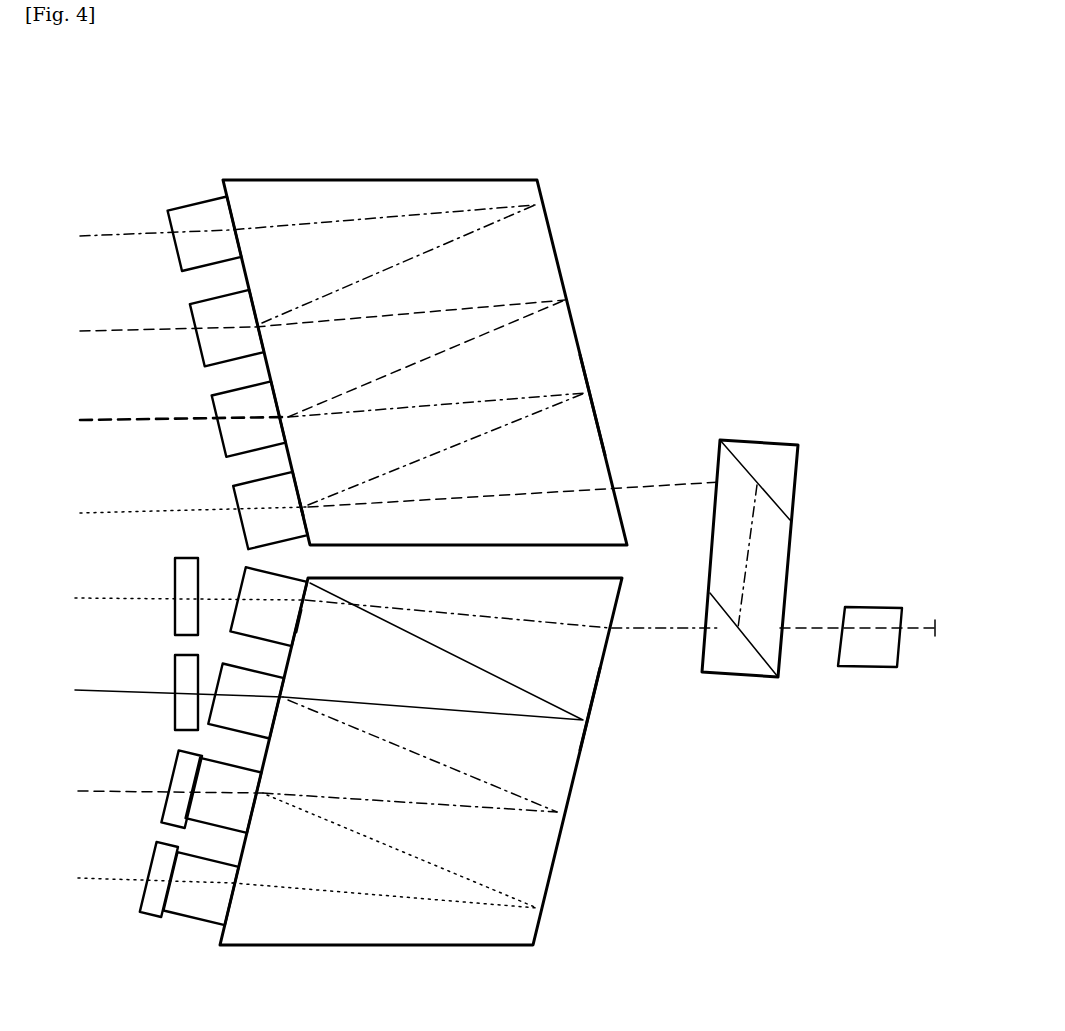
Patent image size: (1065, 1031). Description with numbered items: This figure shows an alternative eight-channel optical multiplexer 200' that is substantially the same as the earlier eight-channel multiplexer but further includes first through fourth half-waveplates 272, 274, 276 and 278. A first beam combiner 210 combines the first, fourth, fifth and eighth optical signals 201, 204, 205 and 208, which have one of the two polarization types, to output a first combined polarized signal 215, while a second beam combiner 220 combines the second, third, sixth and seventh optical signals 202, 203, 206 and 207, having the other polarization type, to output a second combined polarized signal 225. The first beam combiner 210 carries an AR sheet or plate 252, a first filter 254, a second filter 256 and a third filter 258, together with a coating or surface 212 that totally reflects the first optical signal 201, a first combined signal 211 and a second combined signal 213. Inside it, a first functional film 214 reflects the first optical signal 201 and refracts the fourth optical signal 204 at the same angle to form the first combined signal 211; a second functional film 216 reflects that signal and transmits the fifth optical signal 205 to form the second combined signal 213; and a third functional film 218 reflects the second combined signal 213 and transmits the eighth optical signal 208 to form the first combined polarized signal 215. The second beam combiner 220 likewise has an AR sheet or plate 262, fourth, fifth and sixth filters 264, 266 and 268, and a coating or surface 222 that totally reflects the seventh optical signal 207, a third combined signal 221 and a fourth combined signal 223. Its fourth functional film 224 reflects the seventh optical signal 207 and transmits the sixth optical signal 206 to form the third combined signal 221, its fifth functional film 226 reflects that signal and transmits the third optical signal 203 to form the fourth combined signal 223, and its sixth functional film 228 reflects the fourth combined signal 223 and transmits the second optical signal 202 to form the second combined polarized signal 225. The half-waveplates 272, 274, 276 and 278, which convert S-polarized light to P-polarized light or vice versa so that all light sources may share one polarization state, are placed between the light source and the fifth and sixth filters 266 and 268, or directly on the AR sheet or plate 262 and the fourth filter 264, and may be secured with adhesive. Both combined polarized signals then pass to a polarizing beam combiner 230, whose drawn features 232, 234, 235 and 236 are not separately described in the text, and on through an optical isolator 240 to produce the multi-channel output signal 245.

The alternative eight-channel optical multiplexer 200' is at (401, 533).
The first optical signal 201 is at (110, 232).
The second optical signal 202 is at (135, 598).
The third optical signal 203 is at (135, 690).
The fourth optical signal 204 is at (93, 330).
The fifth optical signal 205 is at (92, 413).
The sixth optical signal 206 is at (140, 785).
The seventh optical signal 207 is at (90, 883).
The eighth optical signal 208 is at (138, 508).
The first beam combiner 210 is at (383, 180).
The first combined signal 211 is at (470, 300).
The coating or surface 212 is at (600, 400).
The second combined signal 213 is at (497, 393).
The first functional film 214 is at (270, 333).
The first combined polarized signal 215 is at (530, 490).
The second functional film 216 is at (290, 422).
The third functional film 218 is at (313, 512).
The second beam combiner 220 is at (393, 945).
The third combined signal 221 is at (455, 810).
The coating or surface 222 is at (600, 697).
The fourth combined signal 223 is at (487, 715).
The fourth functional film 224 is at (255, 820).
The second combined polarized signal 225 is at (558, 625).
The fifth functional film 226 is at (280, 722).
The sixth functional film 228 is at (300, 623).
The polarizing beam combiner 230 is at (757, 407).
The first reflective surface 232 is at (798, 460).
The reflected beam path 234 is at (782, 568).
The combined output beam 235 is at (813, 632).
The second reflective surface 236 is at (737, 665).
The optical isolator 240 is at (870, 667).
The multi-channel output signal 245 is at (933, 628).
The AR sheet or plate 252 is at (168, 257).
The first filter 254 is at (193, 352).
The second filter 256 is at (218, 438).
The third filter 258 is at (235, 520).
The AR sheet or plate 262 is at (232, 910).
The fourth filter 264 is at (264, 782).
The fifth filter 266 is at (285, 688).
The sixth filter 268 is at (300, 580).
The first half-waveplate 272 is at (150, 860).
The second half-waveplate 274 is at (172, 762).
The third half-waveplate 276 is at (170, 714).
The fourth half-waveplate 278 is at (172, 610).